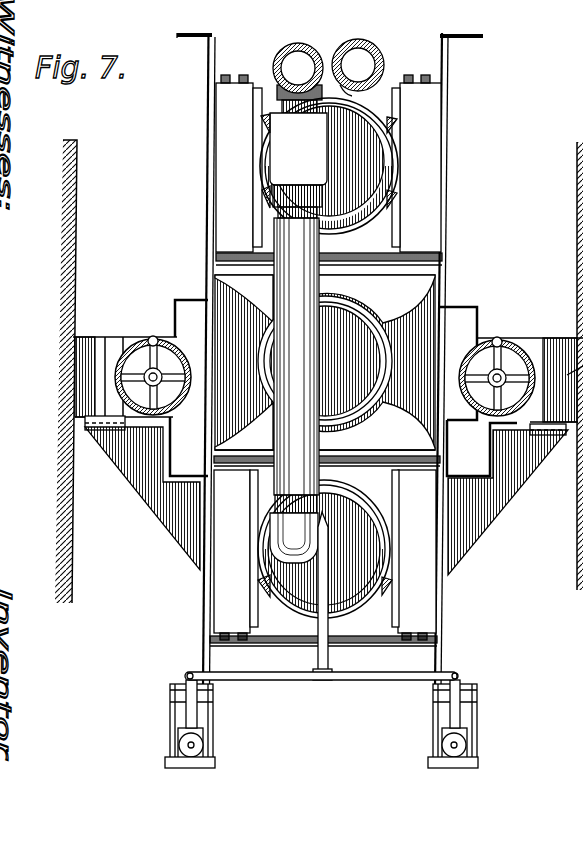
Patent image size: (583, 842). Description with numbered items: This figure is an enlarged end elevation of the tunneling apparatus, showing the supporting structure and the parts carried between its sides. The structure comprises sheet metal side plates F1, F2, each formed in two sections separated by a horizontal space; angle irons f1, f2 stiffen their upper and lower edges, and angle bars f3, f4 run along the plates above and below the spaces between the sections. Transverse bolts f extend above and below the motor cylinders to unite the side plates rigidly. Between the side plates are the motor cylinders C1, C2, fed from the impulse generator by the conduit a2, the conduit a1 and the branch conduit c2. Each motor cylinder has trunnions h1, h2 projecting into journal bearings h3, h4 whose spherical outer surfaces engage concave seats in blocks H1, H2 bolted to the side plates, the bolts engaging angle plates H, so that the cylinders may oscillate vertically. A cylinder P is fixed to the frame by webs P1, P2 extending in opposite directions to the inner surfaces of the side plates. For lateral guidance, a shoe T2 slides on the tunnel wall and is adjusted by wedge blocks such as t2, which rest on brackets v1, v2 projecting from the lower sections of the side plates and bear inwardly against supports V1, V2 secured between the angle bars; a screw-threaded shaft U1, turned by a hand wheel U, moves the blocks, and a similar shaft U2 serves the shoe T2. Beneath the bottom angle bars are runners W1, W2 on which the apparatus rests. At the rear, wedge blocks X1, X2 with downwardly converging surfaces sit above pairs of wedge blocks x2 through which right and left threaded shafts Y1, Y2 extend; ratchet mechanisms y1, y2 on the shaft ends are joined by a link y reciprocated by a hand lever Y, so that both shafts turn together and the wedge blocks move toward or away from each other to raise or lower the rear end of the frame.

The conduit a1 is at (362, 40).
The conduit a2 is at (296, 44).
The motor cylinder C1 is at (329, 166).
The motor cylinder C2 is at (324, 549).
The branch conduit c2 is at (310, 448).
The cylinder P is at (325, 361).
The web P1 is at (405, 320).
The web P2 is at (243, 315).
The angle plate H is at (226, 469).
The block H1 is at (435, 190).
The block H2 is at (222, 197).
The side plate F1 is at (445, 164).
The side plate F2 is at (211, 152).
The transverse bolt f is at (342, 265).
The angle iron f1 is at (462, 40).
The angle iron f2 is at (188, 40).
The angle bar f3 is at (467, 303).
The angle bar f4 is at (178, 303).
The trunnion h1 is at (395, 207).
The trunnion h2 is at (262, 200).
The journal bearing h3 is at (397, 125).
The journal bearing h4 is at (268, 127).
The shoe T2 is at (86, 368).
The wedge block t2 is at (140, 338).
The hand wheel U is at (151, 337).
The screw-threaded shaft U1 is at (490, 373).
The shaft U2 is at (160, 372).
The support V1 is at (480, 313).
The support V2 is at (172, 310).
The bracket v1 is at (513, 427).
The bracket v2 is at (143, 423).
The hand lever Y is at (318, 628).
The link y is at (352, 680).
The wedge block X1 is at (470, 698).
The wedge block X2 is at (173, 698).
The wedge block x2 is at (205, 718).
The screw-threaded shaft Y1 is at (450, 745).
The screw-threaded shaft Y2 is at (193, 745).
The ratchet mechanism y1 is at (463, 737).
The ratchet mechanism y2 is at (178, 735).
The runner W1 is at (478, 765).
The runner W2 is at (165, 763).